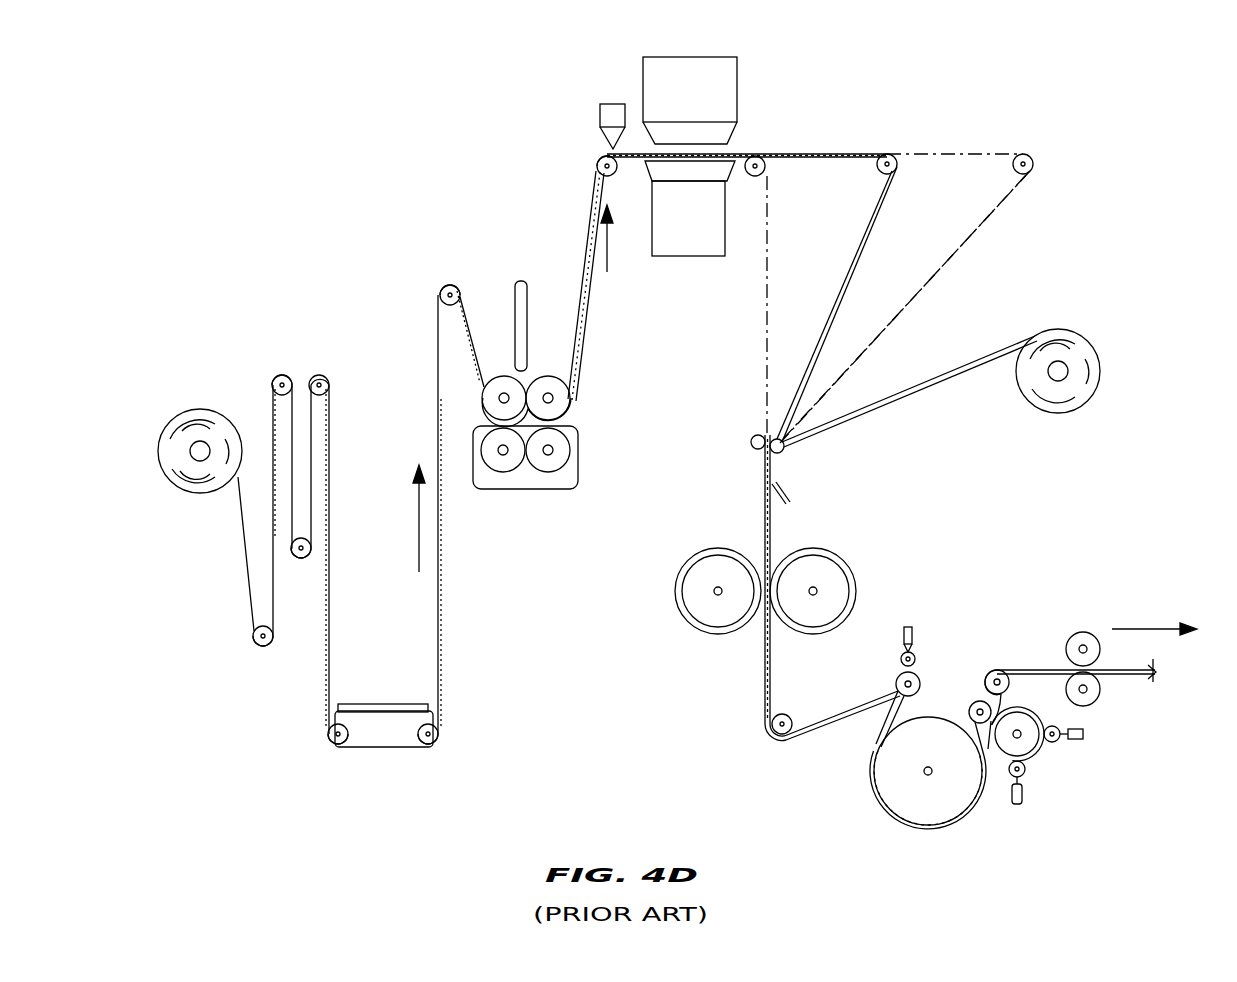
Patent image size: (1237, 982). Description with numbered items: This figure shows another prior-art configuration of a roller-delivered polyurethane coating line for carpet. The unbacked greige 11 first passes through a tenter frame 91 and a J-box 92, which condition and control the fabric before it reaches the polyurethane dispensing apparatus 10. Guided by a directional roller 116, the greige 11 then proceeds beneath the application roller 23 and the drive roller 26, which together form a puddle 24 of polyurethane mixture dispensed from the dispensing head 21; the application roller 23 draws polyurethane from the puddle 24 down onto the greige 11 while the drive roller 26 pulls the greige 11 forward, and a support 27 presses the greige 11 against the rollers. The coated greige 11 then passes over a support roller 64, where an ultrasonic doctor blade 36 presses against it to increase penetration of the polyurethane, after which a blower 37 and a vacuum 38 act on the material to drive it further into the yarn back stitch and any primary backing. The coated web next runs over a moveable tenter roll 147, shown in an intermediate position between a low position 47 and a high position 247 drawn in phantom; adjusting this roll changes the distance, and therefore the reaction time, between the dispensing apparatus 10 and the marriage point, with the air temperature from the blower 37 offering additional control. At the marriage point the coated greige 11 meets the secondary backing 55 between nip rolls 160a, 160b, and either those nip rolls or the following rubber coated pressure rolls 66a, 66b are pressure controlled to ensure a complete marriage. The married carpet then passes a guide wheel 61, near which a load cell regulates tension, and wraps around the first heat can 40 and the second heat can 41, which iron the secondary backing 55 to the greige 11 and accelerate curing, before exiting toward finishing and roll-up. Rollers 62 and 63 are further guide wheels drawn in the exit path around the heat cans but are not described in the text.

The polyurethane dispensing apparatus 10 is at (600, 458).
The greige 11 is at (233, 410).
The polyurethane dispensing head 21 is at (522, 280).
The application roller 23 is at (497, 378).
The puddle 24 is at (530, 378).
The drive roller 26 is at (562, 410).
The support 27 is at (522, 499).
The ultrasonic doctor blade 36 is at (605, 115).
The blower 37 is at (690, 100).
The vacuum 38 is at (690, 208).
The first heat can 40 is at (884, 823).
The second heat can 41 is at (1038, 762).
The low position 47 is at (765, 158).
The secondary backing 55 is at (1033, 336).
The guide wheel 61 is at (896, 696).
The roller 62 is at (1003, 672).
The roller 63 is at (978, 702).
The support roller 64 is at (598, 172).
The rubber coated pressure roll 66a is at (852, 572).
The rubber coated pressure roll 66b is at (700, 632).
The tenter frame 91 is at (298, 362).
The J-box 92 is at (366, 690).
The directional roller 116 is at (446, 285).
The moveable tenter roll 147 is at (893, 157).
The nip roll 160a is at (786, 452).
The nip roll 160b is at (750, 443).
The high position 247 is at (1018, 170).